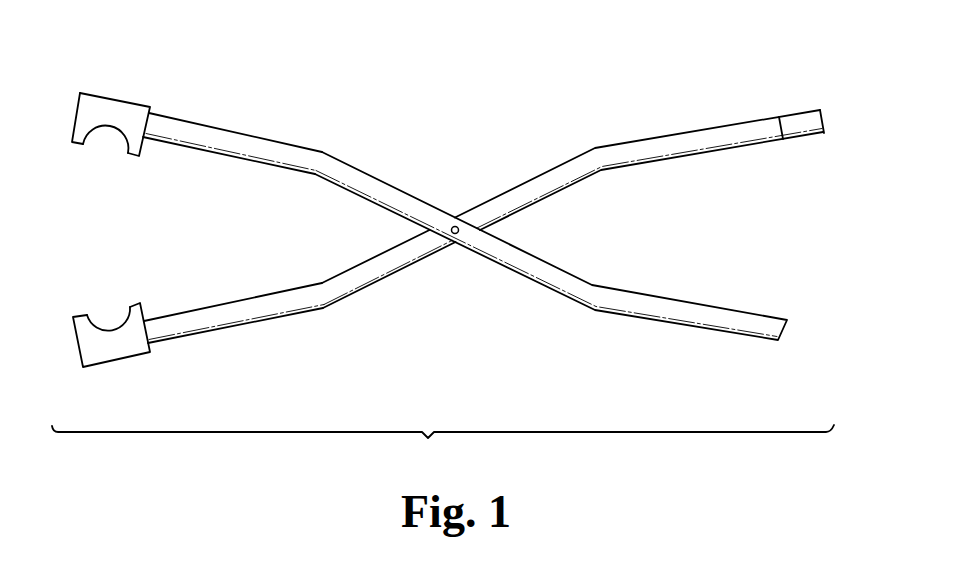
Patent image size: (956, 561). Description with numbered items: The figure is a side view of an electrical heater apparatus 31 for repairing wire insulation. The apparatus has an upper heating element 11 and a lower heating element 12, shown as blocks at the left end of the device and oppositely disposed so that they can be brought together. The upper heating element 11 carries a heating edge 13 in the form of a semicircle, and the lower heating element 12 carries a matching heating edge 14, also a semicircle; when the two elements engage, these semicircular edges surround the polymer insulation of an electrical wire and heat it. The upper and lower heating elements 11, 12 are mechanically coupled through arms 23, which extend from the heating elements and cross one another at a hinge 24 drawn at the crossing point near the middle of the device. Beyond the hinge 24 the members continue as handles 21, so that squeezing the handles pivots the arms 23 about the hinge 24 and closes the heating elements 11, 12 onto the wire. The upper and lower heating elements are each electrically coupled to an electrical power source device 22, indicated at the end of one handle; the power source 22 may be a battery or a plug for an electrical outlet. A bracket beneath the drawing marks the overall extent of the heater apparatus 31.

The upper heating element 11 is at (76, 110).
The lower heating element 12 is at (77, 343).
The heating edge 13 is at (111, 132).
The heating edge 14 is at (103, 332).
The handles 21 is at (675, 145).
The electrical power source device 22 is at (798, 122).
The arms 23 is at (228, 145).
The hinge 24 is at (452, 234).
The electrical heater apparatus 31 is at (443, 445).